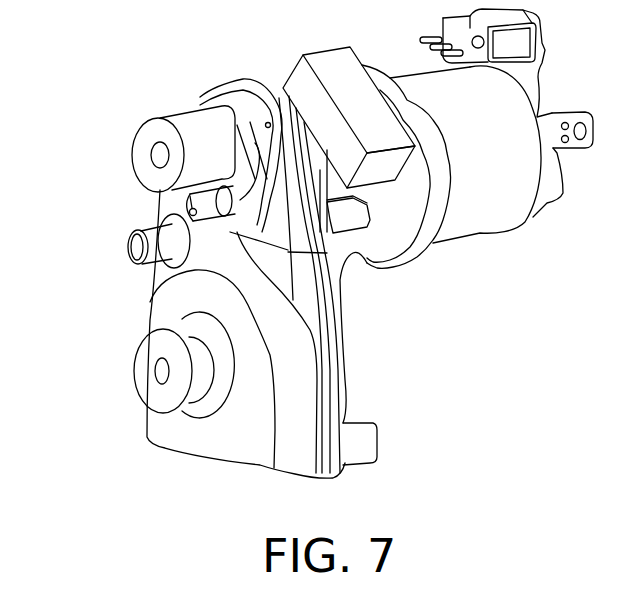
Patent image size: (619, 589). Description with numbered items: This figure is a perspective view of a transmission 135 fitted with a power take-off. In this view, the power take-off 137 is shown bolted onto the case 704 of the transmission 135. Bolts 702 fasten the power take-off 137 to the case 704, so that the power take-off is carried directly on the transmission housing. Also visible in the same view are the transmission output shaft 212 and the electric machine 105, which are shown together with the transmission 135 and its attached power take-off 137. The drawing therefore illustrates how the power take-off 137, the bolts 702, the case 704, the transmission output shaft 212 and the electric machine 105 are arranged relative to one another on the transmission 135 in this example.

The electric machine 105 is at (487, 221).
The transmission 135 is at (348, 323).
The power take-off 137 is at (130, 98).
The transmission output shaft 212 is at (135, 366).
The bolts 702 is at (226, 87).
The case 704 is at (340, 270).